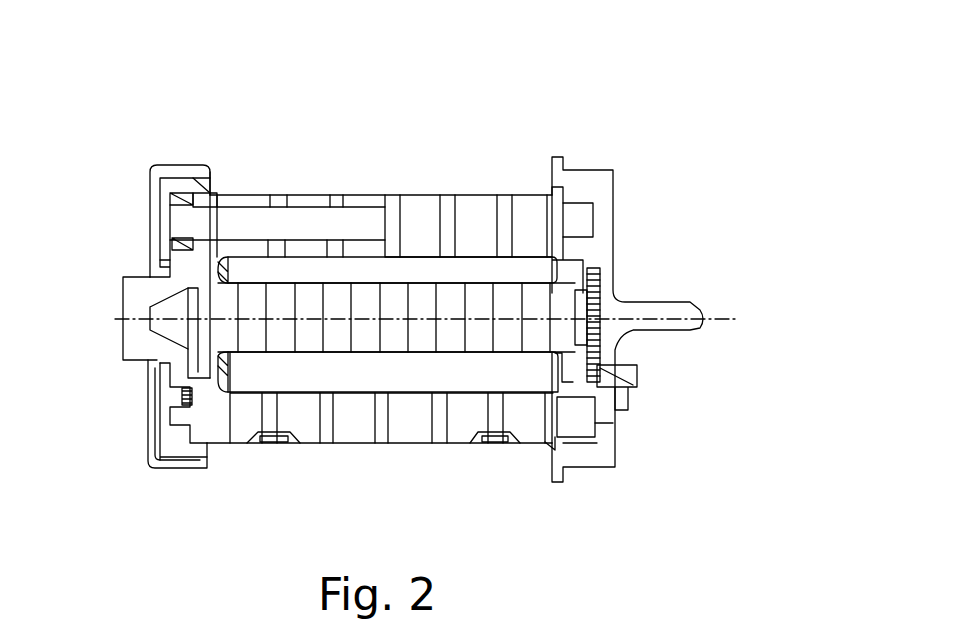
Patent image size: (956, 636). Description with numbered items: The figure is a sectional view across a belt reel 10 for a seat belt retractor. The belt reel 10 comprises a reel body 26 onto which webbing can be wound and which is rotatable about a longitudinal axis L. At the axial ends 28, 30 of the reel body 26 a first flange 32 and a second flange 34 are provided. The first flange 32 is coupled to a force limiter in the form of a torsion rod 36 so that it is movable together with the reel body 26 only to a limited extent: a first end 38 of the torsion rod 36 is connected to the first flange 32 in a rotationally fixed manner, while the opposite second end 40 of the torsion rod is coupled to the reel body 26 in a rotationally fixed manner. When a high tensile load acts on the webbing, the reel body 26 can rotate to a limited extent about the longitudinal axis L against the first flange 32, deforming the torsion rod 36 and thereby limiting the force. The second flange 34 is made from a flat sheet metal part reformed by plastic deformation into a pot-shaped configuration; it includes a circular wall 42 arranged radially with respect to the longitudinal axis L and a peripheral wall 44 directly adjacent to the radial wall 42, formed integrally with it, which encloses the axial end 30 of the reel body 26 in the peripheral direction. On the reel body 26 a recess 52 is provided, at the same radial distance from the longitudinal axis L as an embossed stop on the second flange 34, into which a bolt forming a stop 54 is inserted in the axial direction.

The belt reel 10 is at (659, 98).
The reel body 26 is at (458, 207).
The axial end 28 is at (545, 218).
The axial end 30 is at (157, 262).
The first flange 32 is at (597, 253).
The second flange 34 is at (160, 224).
The torsion rod 36 is at (400, 328).
The first end of the torsion rod 38 is at (610, 365).
The second end of the torsion rod 40 is at (199, 372).
The circular wall 42 is at (150, 437).
The peripheral wall 44 is at (183, 463).
The recess 52 is at (346, 216).
The stop 54 is at (296, 221).
The longitudinal axis L is at (735, 320).